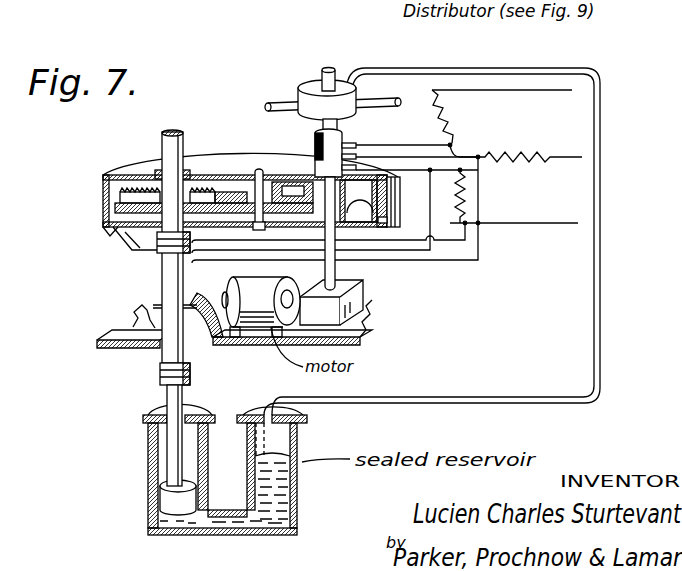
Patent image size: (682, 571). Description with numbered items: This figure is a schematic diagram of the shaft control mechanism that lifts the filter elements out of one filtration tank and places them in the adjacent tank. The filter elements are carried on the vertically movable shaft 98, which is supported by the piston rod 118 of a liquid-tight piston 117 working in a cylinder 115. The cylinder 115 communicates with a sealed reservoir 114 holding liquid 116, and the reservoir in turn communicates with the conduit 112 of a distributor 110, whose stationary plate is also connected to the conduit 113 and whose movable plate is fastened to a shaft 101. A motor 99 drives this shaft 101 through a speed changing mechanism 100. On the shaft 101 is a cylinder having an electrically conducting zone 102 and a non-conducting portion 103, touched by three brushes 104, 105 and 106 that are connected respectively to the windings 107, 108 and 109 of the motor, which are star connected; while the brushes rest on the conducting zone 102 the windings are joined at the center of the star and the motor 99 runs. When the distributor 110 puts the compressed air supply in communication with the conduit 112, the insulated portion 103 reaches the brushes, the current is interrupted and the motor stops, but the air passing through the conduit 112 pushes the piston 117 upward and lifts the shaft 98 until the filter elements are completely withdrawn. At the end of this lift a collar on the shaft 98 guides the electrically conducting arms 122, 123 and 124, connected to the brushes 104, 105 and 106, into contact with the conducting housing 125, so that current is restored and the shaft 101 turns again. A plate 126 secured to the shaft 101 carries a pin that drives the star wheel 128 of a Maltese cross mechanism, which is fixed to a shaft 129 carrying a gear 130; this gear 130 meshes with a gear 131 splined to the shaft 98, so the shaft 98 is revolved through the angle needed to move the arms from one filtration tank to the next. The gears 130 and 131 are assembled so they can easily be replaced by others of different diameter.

The shaft 98 is at (167, 356).
The motor 99 is at (263, 308).
The speed changing mechanism 100 is at (357, 298).
The shaft 101 is at (335, 271).
The electrically conducting zone 102 is at (348, 92).
The non-conducting portion 103 is at (318, 148).
The brush 104 is at (397, 181).
The brush 105 is at (355, 155).
The brush 106 is at (348, 144).
The winding 107 is at (468, 208).
The winding 108 is at (530, 164).
The winding 109 is at (456, 117).
The distributor 110 is at (313, 88).
The conduit 112 is at (528, 66).
The conduit 113 is at (282, 102).
The sealed reservoir 114 is at (300, 438).
The cylinder 115 is at (153, 470).
The liquid 116 is at (275, 486).
The liquid-tight piston 117 is at (166, 506).
The piston rod 118 is at (172, 445).
The electrically conducting arm 122 is at (140, 240).
The electrically conducting arm 123 is at (194, 252).
The electrically conducting arm 124 is at (192, 231).
The housing 125 is at (109, 228).
The plate 126 is at (384, 221).
The star wheel 128 is at (233, 177).
The shaft 129 is at (263, 229).
The gear 130 is at (267, 176).
The gear 131 is at (115, 202).